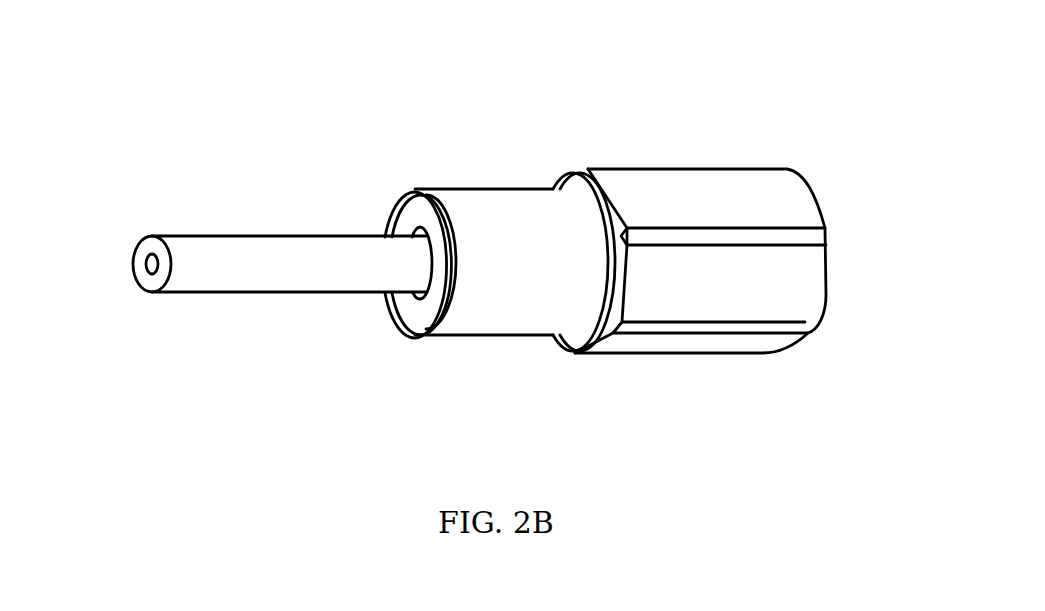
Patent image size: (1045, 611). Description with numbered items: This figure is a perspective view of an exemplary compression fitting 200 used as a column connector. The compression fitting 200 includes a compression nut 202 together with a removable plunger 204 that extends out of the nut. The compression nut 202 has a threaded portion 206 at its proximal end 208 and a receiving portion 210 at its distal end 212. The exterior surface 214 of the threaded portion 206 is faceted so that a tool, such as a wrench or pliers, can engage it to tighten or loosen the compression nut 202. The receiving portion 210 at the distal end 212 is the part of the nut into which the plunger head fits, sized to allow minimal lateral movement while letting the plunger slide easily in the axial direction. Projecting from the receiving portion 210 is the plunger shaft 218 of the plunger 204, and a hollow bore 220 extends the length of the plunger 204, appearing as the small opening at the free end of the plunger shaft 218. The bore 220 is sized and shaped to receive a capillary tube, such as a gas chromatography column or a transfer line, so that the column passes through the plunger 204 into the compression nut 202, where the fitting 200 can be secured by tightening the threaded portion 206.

The compression fitting 200 is at (216, 105).
The compression nut 202 is at (705, 357).
The removable plunger 204 is at (280, 235).
The threaded portion 206 is at (813, 160).
The proximal end 208 is at (817, 210).
The receiving portion 210 is at (383, 172).
The distal end 212 is at (387, 215).
The exterior surface 214 is at (770, 272).
The plunger shaft 218 is at (467, 355).
The hollow bore 220 is at (133, 258).